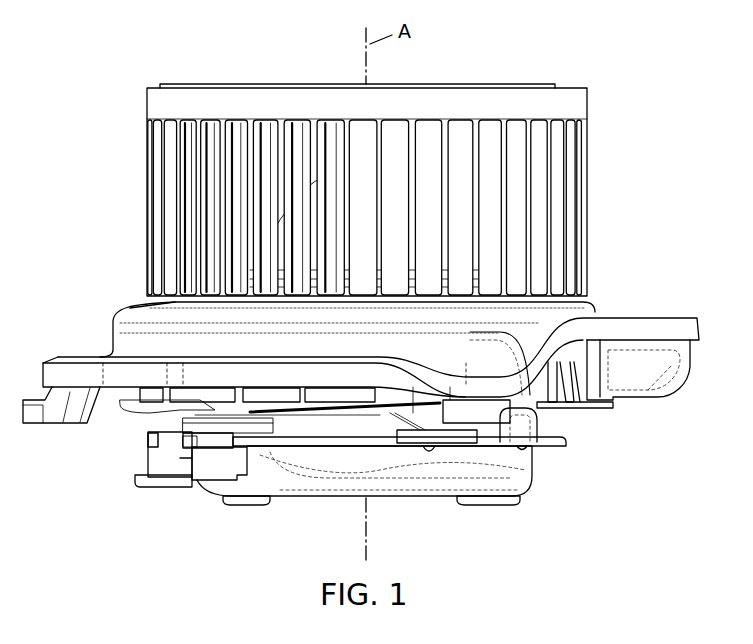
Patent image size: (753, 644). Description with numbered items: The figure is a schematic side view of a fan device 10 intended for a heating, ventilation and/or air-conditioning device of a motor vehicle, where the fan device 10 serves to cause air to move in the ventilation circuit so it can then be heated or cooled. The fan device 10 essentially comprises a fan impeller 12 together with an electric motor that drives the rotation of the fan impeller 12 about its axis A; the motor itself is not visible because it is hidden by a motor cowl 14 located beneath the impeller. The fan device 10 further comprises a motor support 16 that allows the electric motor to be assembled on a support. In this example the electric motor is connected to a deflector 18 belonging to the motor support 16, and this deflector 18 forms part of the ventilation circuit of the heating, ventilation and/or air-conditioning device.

The fan device 10 is at (118, 98).
The fan impeller 12 is at (565, 107).
The motor cowl 14 is at (500, 487).
The motor support 16 is at (556, 392).
The deflector 18 is at (525, 323).